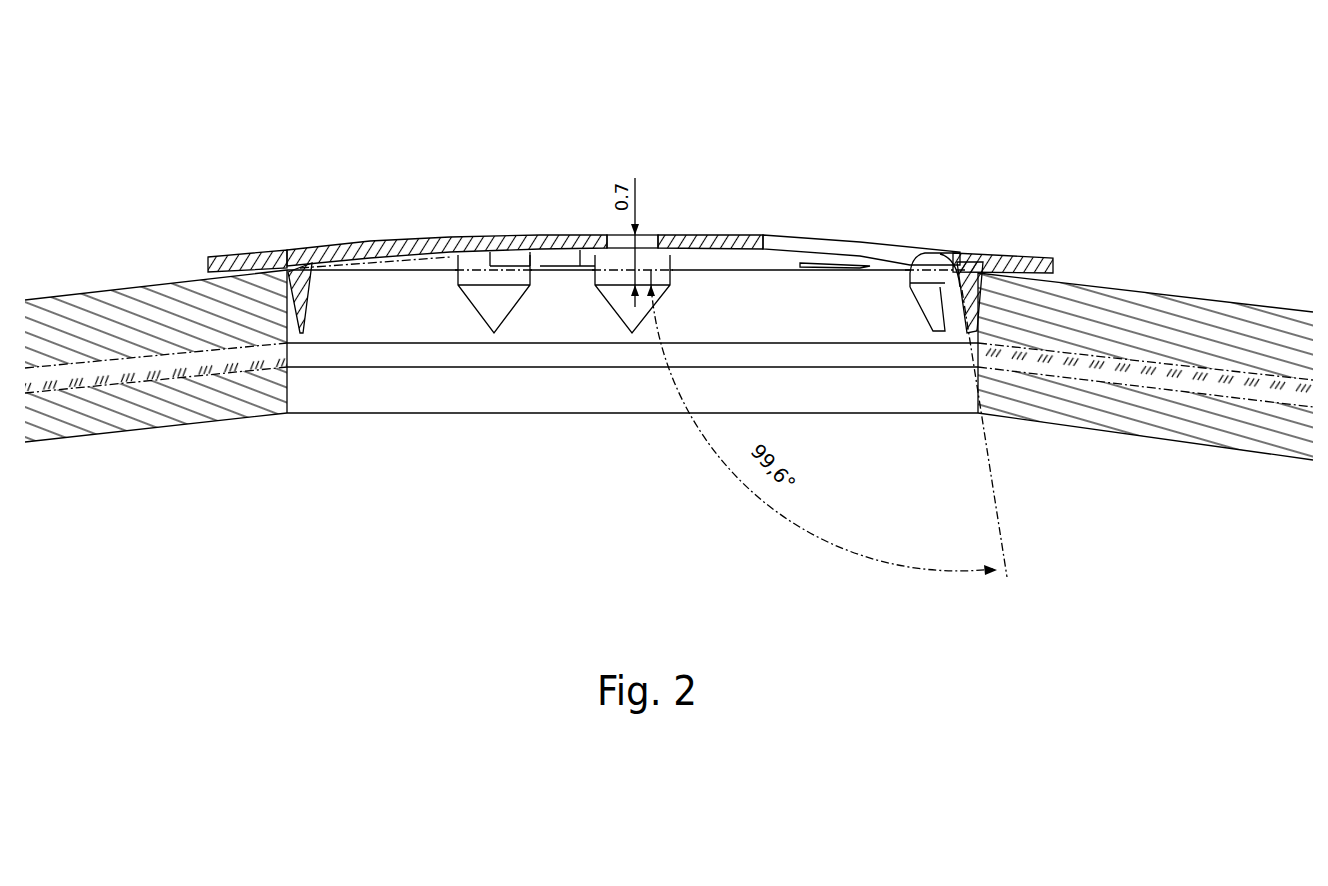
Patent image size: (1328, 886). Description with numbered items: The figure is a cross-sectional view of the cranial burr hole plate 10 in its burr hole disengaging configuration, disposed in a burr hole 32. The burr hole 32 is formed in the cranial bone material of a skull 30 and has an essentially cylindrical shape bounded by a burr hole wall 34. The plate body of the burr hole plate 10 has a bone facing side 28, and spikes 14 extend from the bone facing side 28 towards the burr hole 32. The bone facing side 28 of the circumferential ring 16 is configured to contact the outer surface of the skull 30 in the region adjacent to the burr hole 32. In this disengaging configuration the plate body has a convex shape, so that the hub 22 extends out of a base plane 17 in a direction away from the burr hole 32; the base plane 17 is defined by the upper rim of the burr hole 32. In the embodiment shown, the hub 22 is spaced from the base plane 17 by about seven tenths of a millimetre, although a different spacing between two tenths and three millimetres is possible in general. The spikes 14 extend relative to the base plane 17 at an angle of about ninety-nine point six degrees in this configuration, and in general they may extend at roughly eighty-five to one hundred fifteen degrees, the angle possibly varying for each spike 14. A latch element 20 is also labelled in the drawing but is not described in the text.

The cranial burr hole plate 10 is at (318, 152).
The spikes 14 is at (497, 307).
The circumferential ring 16 is at (1013, 263).
The base plane 17 is at (777, 267).
The latch 20 is at (858, 260).
The hub 22 is at (682, 243).
The bone facing side 28 is at (387, 258).
The skull 30 is at (128, 228).
The burr hole 32 is at (582, 395).
The burr hole wall 34 is at (287, 343).